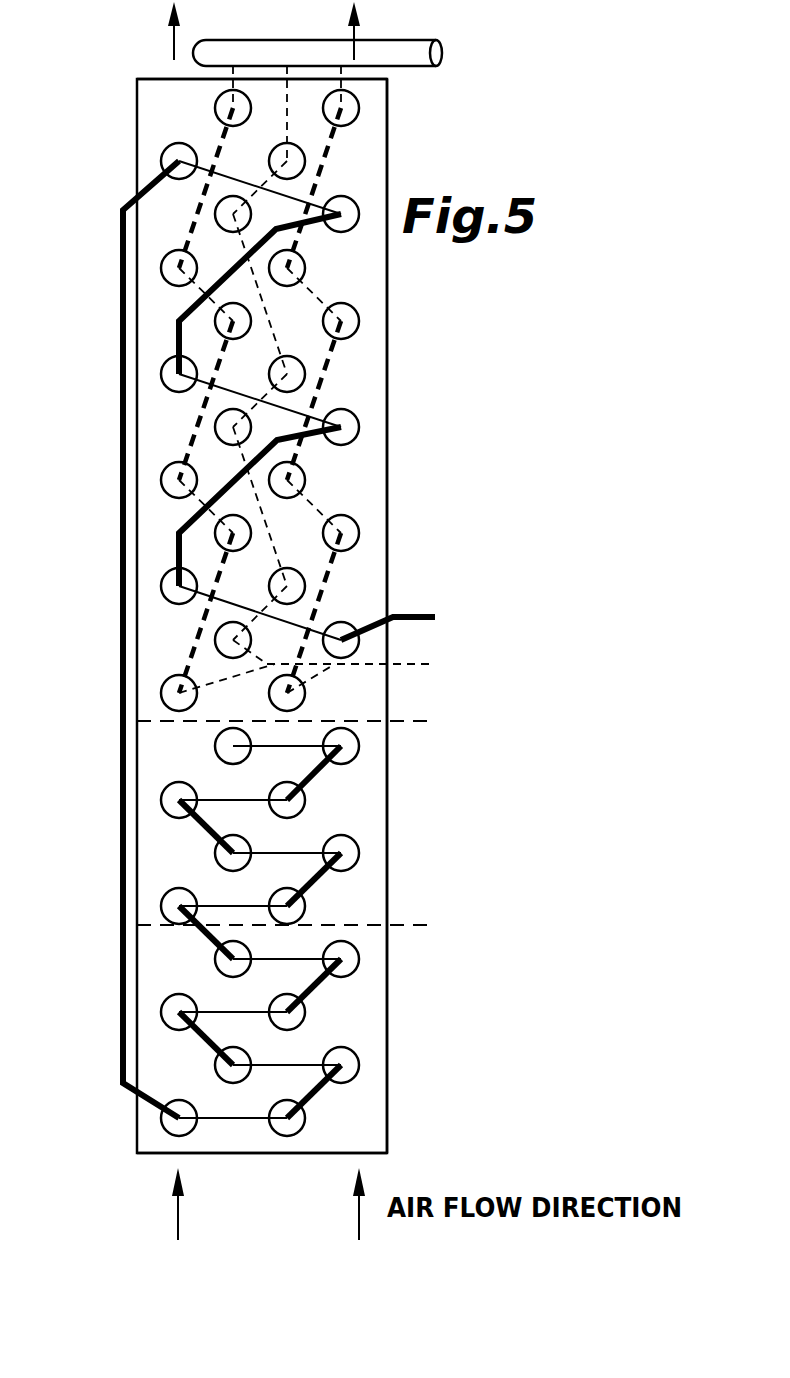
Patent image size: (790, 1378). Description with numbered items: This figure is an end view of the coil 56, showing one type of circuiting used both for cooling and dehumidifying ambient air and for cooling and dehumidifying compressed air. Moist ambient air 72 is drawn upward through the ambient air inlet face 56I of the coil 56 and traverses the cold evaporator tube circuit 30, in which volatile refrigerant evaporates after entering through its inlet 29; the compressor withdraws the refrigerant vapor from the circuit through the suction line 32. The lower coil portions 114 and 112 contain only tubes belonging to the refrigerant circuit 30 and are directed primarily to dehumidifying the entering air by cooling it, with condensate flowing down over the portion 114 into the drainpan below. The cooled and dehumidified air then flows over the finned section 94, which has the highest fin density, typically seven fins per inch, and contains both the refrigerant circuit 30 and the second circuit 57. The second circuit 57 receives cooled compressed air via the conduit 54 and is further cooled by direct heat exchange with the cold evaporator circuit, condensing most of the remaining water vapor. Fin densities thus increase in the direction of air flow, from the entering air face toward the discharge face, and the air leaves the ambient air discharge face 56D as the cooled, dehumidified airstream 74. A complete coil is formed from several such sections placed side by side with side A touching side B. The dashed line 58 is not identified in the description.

The coil 56 is at (373, 1127).
The ambient air discharge face 56D is at (155, 77).
The ambient air inlet face 56I is at (157, 1153).
The side A is at (387, 150).
The side B is at (137, 140).
The conduit 54 is at (405, 68).
The cooled, dehumidified airstream 74 is at (354, 36).
The moist ambient air 72 is at (359, 1218).
The finned section 94 is at (343, 402).
The second circuit 57 is at (358, 317).
The refrigerant line 58 is at (402, 667).
The suction line 32 is at (415, 613).
The fins (coil portion) 112 is at (294, 843).
The inlet 29 is at (210, 750).
The fins (coil portion) 114 is at (349, 1038).
The first tube circuit (evaporator coil) 30 is at (360, 958).